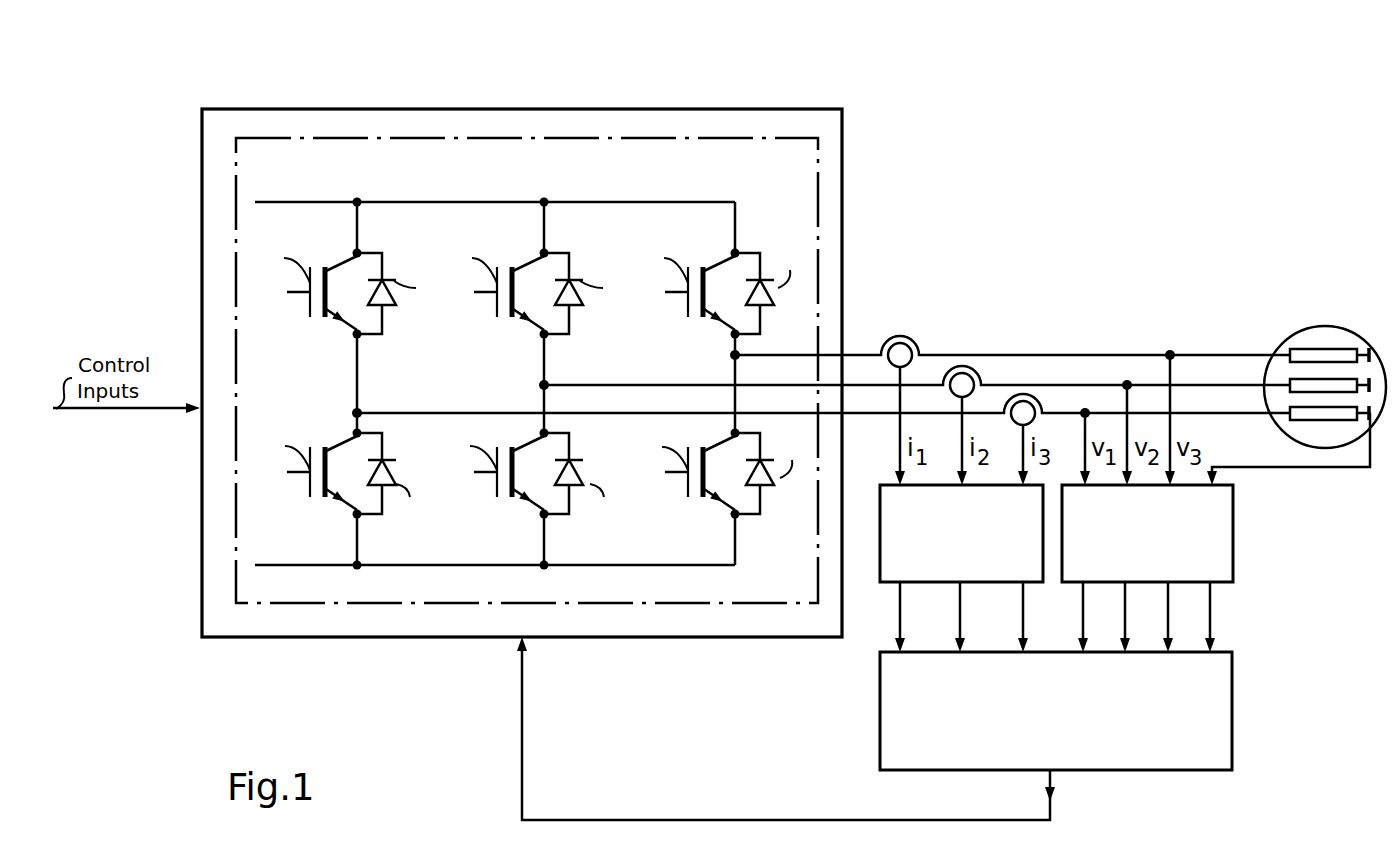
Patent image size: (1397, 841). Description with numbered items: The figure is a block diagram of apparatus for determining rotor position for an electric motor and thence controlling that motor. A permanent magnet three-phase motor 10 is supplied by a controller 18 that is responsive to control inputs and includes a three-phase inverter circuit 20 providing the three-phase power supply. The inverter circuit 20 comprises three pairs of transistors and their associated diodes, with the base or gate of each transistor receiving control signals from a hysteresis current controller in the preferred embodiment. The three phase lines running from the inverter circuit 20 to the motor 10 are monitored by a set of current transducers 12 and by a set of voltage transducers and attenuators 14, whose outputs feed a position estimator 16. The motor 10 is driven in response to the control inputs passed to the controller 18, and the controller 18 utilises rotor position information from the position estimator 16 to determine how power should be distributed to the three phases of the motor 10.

The permanent magnet 3-phase motor 10 is at (1296, 334).
The set of current transducers 12 is at (940, 531).
The set of voltage transducers and attenuators 14 is at (1114, 508).
The position estimator 16 is at (1035, 719).
The controller 18 is at (290, 639).
The 3-phase inverter circuit 20 is at (350, 610).